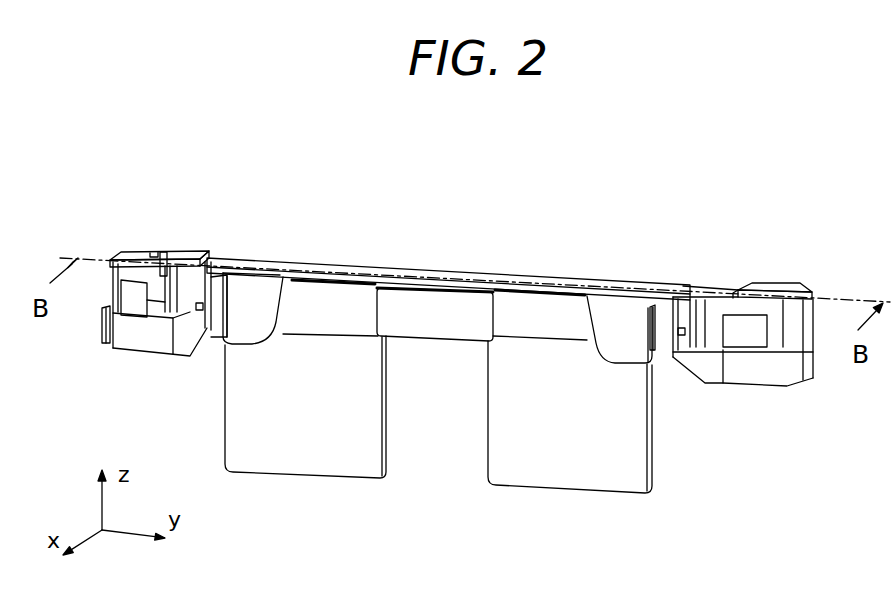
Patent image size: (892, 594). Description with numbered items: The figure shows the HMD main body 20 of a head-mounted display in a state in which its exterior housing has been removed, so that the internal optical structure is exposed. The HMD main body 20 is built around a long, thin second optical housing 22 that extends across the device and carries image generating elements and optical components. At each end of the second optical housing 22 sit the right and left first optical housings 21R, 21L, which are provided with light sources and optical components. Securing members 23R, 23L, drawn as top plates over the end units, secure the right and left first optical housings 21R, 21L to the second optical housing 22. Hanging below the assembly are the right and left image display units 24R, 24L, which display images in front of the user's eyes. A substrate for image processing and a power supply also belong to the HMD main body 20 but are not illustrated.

The HMD main body 20 is at (417, 238).
The second optical housing 22 is at (480, 277).
The securing member 23R is at (175, 250).
The securing member 23L is at (768, 283).
The first optical housing 21R is at (147, 332).
The first optical housing 21L is at (760, 367).
The image display unit 24R is at (307, 463).
The image display unit 24L is at (568, 473).